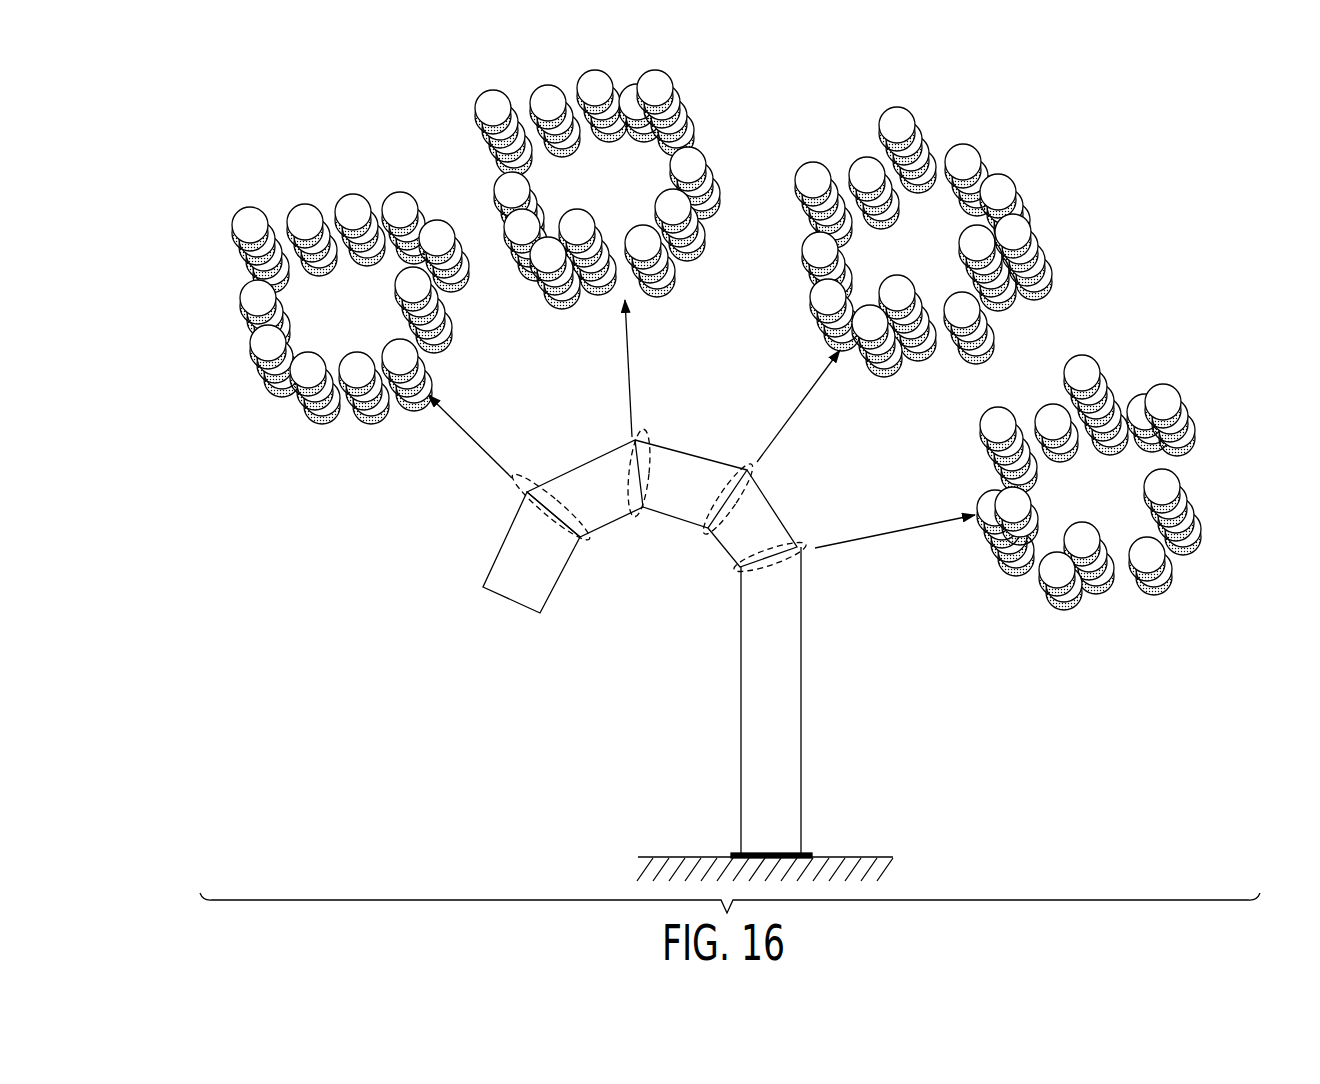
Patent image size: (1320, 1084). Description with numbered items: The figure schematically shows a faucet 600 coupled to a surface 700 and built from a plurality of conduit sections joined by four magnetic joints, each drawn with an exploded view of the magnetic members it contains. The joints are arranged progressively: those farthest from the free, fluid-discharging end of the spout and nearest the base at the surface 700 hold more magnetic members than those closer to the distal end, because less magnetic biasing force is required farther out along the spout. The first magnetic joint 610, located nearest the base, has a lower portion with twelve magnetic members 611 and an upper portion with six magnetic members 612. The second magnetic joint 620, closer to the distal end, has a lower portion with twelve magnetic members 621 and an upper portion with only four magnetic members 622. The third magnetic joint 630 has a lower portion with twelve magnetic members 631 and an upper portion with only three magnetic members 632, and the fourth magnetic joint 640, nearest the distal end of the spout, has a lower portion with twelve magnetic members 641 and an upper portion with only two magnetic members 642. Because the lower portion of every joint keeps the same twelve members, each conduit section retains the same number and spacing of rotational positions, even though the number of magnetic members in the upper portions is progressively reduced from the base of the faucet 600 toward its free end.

The faucet 600 is at (823, 732).
The surface 700 is at (848, 857).
The first magnetic joint 610 is at (803, 548).
The magnetic members 611 is at (1193, 450).
The magnetic members 612 is at (995, 418).
The second magnetic joint 620 is at (760, 460).
The magnetic members 621 is at (867, 173).
The magnetic members 622 is at (890, 123).
The third magnetic joint 630 is at (648, 518).
The magnetic members 631 is at (640, 88).
The magnetic members 632 is at (493, 108).
The fourth magnetic joint 640 is at (590, 545).
The magnetic members 641 is at (353, 212).
The magnetic members 642 is at (250, 225).